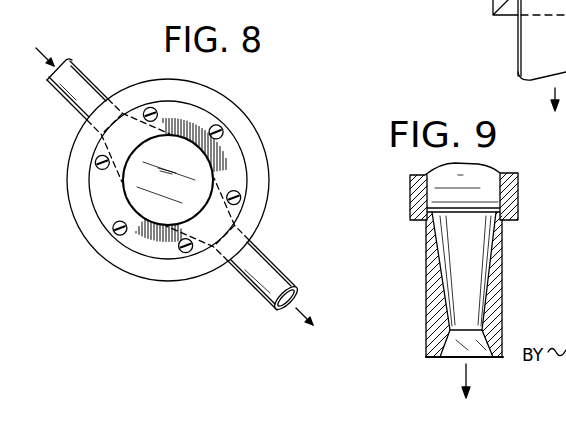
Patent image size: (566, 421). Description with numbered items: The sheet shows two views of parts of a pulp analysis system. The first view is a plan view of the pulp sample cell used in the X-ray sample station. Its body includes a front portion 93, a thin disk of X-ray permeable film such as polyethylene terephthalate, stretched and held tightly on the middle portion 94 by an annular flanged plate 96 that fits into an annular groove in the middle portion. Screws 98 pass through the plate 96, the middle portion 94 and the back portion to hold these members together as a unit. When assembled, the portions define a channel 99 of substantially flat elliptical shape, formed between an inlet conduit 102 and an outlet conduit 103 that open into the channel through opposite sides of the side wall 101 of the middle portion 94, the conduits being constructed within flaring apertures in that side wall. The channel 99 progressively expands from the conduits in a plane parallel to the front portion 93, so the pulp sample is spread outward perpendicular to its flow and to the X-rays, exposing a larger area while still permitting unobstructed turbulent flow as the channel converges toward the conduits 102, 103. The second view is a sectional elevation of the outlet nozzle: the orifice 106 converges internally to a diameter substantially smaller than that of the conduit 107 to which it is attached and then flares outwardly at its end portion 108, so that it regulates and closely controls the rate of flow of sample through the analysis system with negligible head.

In FIG. 8, the front portion 93 is at (135, 181).
In FIG. 8, the middle portion 94 is at (252, 178).
In FIG. 8, the annular flanged plate 96 is at (229, 152).
In FIG. 8, the screws 98 is at (220, 127).
In FIG. 8, the channel 99 is at (158, 114).
In FIG. 8, the side wall 101 is at (123, 90).
In FIG. 8, the inlet conduit 102 is at (72, 63).
In FIG. 8, the outlet conduit 103 is at (254, 247).
In FIG. 9, the orifice 106 is at (502, 260).
In FIG. 9, the conduit 107 is at (513, 198).
In FIG. 9, the end portion 108 is at (441, 347).